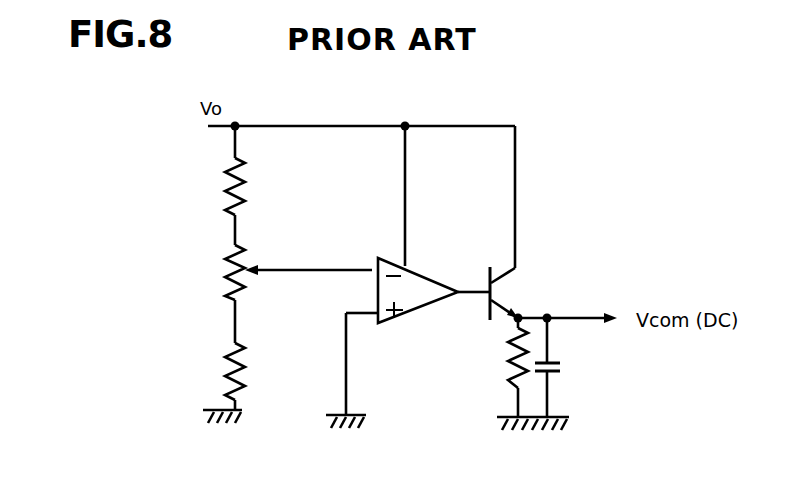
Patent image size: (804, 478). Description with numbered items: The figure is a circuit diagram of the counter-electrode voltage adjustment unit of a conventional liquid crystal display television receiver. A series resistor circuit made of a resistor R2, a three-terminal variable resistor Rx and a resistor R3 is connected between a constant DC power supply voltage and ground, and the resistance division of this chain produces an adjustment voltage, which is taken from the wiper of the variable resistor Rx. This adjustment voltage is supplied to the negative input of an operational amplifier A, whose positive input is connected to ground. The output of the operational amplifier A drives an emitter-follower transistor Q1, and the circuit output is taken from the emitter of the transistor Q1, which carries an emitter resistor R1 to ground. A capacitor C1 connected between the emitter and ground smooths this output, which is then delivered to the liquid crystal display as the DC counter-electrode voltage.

The resistor R2 is at (213, 186).
The three-terminal variable resistor Rx is at (277, 272).
The resistor R3 is at (213, 371).
The operational amplifier A is at (434, 290).
The emitter-follower transistor Q1 is at (520, 293).
The emitter resistor R1 is at (498, 353).
The capacitor C1 is at (561, 368).